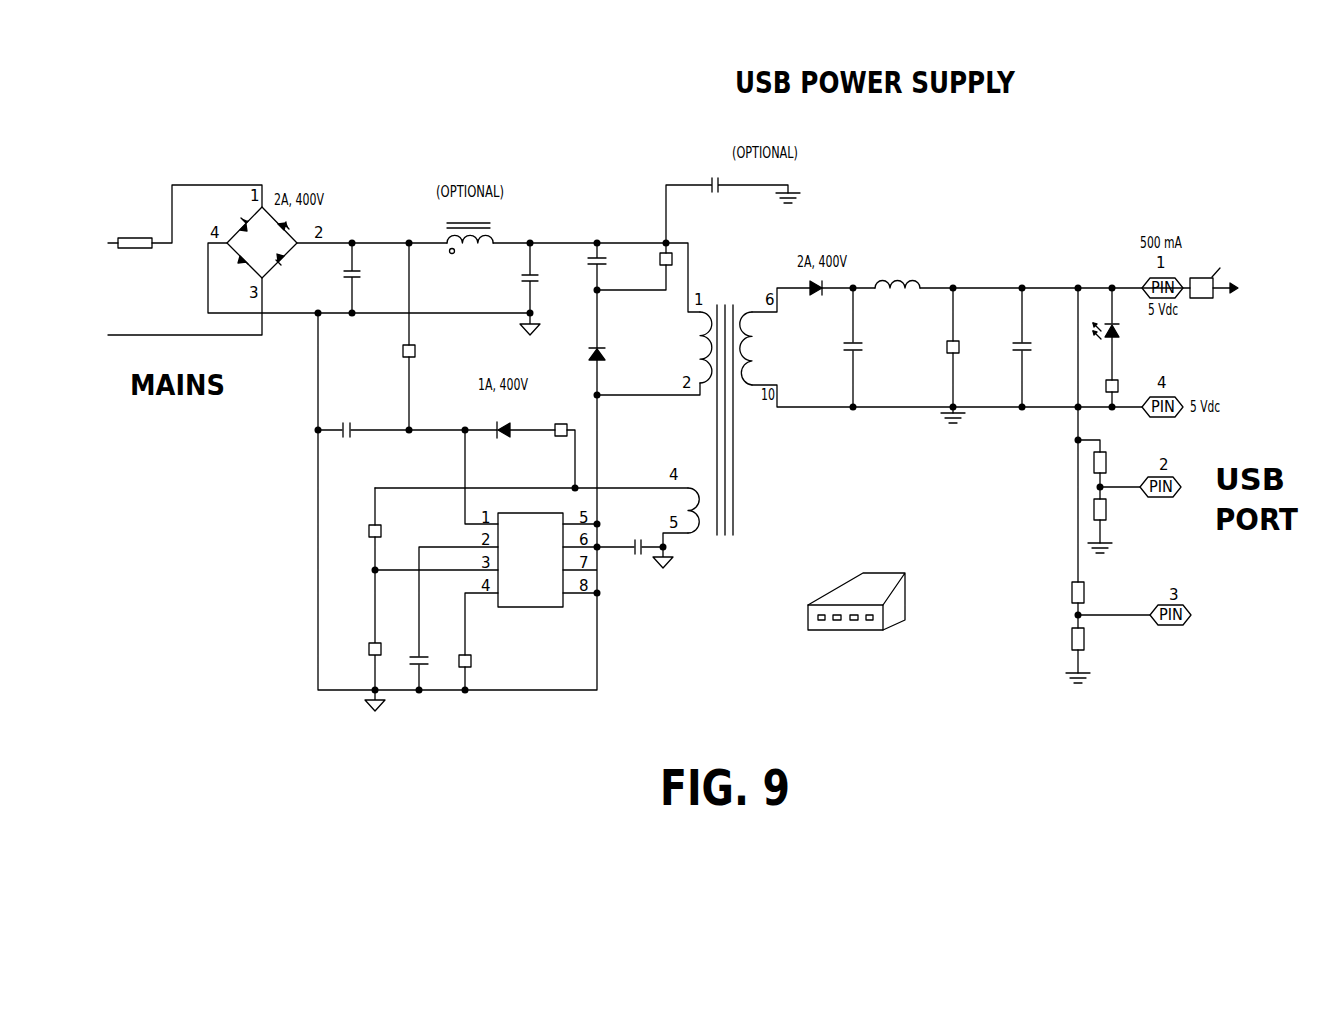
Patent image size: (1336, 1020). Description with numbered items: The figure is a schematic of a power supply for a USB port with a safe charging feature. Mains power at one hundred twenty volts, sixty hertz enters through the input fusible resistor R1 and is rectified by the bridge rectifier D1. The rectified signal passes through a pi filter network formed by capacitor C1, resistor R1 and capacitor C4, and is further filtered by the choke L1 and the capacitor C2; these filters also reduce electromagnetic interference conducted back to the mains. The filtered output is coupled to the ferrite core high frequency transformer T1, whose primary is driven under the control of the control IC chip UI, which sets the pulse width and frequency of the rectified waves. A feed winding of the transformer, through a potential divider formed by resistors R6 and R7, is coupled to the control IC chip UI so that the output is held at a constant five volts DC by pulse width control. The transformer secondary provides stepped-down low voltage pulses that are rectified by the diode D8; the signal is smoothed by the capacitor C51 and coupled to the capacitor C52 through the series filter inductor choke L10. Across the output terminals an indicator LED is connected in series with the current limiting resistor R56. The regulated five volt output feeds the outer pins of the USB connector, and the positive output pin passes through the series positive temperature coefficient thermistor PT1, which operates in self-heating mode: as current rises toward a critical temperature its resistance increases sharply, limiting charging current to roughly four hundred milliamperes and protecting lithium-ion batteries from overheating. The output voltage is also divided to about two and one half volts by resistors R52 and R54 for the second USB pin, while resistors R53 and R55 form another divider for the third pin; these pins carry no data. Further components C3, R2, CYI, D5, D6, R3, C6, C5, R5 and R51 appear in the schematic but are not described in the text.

The fusible resistor R1 is at (286, 295).
The bridge rectifier D1 is at (251, 241).
The capacitor C1 is at (371, 278).
The choke L1 is at (489, 228).
The capacitor C2 is at (548, 278).
The capacitor C3 is at (627, 257).
The resistor R2 is at (675, 244).
The Y capacitor (optional) CYI is at (727, 200).
The diode D5 is at (612, 334).
The ferrite core high frequency transformer T1 is at (720, 402).
The capacitor C4 is at (357, 432).
The diode D6 is at (503, 419).
The resistor R3 is at (558, 429).
The resistor R6 is at (402, 515).
The control IC chip UI is at (530, 571).
The capacitor C6 is at (641, 572).
The resistor R7 is at (350, 638).
The capacitor C5 is at (429, 640).
The resistor R5 is at (512, 664).
The diode D8 is at (817, 301).
The series filter inductor choke L10 is at (897, 283).
The capacitor C51 is at (864, 356).
The resistor R51 is at (964, 330).
The capacitor C52 is at (1036, 355).
The indicator LED is at (1122, 332).
The series current limiting resistor R56 is at (1155, 394).
The resistor R52 is at (1115, 466).
The resistor R54 is at (1125, 541).
The resistor R53 is at (1122, 567).
The resistor R55 is at (1122, 663).
The PTC thermistor PT1 is at (1188, 306).
The USB connector USB is at (853, 625).